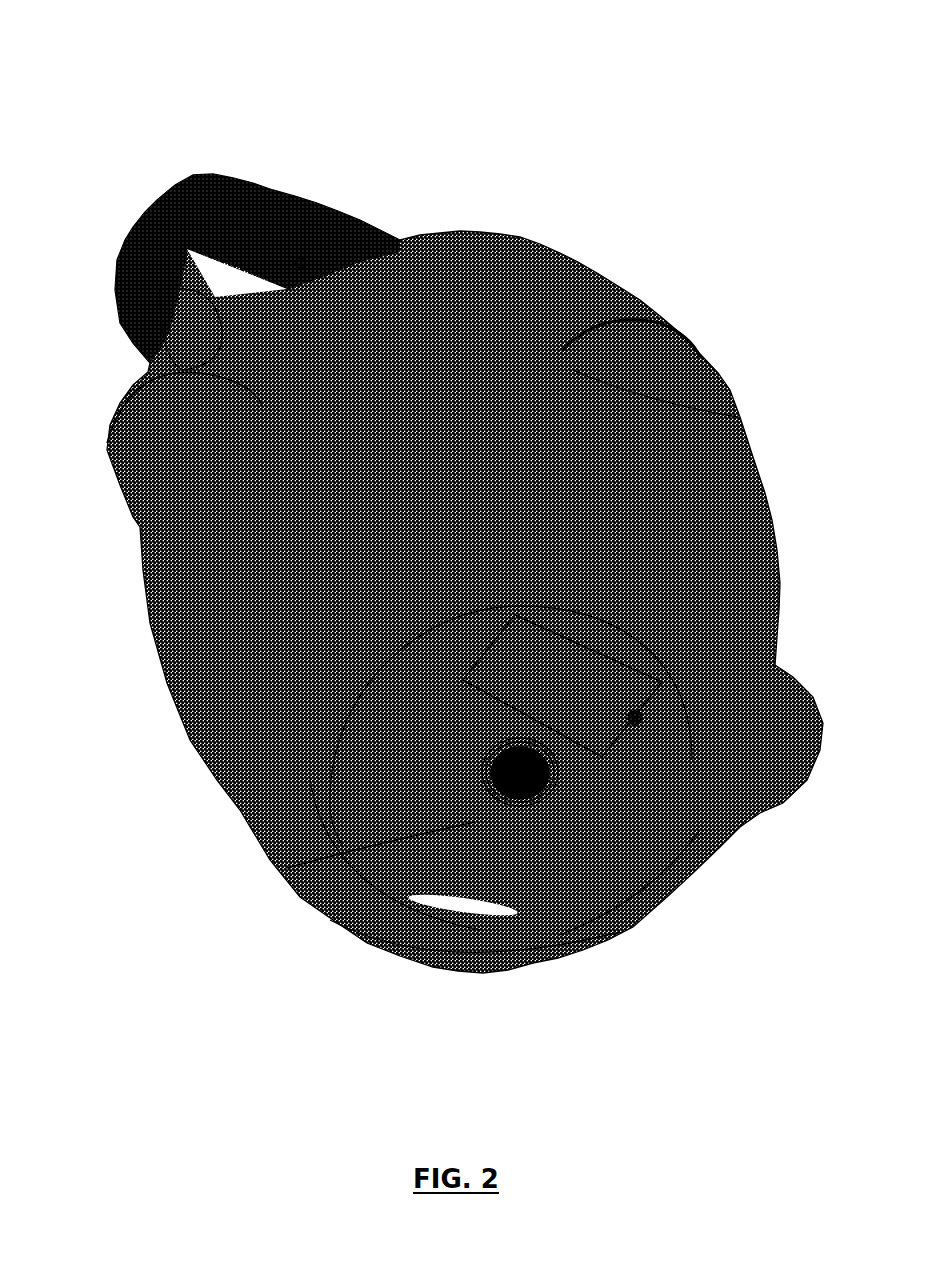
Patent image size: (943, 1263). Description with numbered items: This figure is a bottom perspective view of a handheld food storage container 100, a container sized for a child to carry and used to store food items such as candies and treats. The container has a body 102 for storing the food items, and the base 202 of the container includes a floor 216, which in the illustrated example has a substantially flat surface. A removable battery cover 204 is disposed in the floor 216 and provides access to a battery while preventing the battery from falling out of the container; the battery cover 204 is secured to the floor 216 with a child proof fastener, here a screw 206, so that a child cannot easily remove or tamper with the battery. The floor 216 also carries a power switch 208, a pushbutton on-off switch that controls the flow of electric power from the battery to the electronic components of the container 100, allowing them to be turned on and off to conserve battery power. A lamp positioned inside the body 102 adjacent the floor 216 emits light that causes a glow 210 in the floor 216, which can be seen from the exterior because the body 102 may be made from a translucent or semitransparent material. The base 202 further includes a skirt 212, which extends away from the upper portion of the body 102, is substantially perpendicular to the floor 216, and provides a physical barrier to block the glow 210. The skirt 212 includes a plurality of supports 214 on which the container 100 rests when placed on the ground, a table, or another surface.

The container 100 is at (472, 528).
The body 102 is at (88, 591).
The base 202 is at (528, 819).
The battery cover 204 is at (657, 663).
The screw 206 is at (648, 718).
The power switch 208 is at (548, 800).
The glow 210 is at (287, 868).
The skirt 212 is at (387, 883).
The supports 214 is at (462, 948).
The floor 216 is at (397, 775).